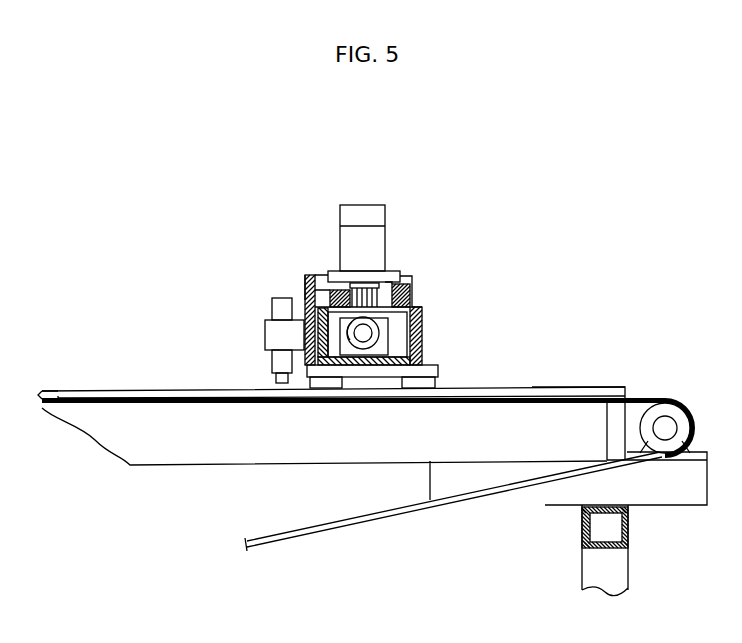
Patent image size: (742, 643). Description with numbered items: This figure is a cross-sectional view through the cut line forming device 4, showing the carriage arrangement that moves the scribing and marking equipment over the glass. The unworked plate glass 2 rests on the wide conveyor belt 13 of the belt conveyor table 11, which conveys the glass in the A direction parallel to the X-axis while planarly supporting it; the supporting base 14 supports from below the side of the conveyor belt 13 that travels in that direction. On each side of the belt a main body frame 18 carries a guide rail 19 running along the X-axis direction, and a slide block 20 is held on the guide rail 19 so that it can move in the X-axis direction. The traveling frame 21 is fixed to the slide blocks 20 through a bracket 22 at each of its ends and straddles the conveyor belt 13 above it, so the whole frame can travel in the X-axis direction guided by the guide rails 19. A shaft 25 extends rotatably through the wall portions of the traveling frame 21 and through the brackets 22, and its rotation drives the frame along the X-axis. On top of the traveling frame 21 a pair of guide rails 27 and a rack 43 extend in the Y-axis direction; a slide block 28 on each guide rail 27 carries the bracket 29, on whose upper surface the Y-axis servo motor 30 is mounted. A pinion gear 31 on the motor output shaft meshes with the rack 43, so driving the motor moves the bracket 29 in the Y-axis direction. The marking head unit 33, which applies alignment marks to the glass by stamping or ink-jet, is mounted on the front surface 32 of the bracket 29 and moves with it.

The unworked plate glass 2 is at (96, 397).
The cut line forming device 4 is at (592, 366).
The belt conveyor table 11 is at (173, 391).
The conveyor belt 13 is at (51, 391).
The supporting base 14 is at (156, 433).
The main body frame 18 is at (607, 526).
The guide rail 19 is at (533, 386).
The slide block 20 is at (420, 382).
The traveling frame 21 is at (419, 306).
The bracket 22 is at (386, 367).
The shaft 25 is at (370, 333).
The guide rail 27 is at (324, 293).
The slide block 28 is at (333, 291).
The bracket 29 is at (392, 283).
The Y-axis servo motor 30 is at (363, 262).
The pinion gear 31 is at (370, 292).
The front surface 32 is at (306, 300).
The marking head unit 33 is at (270, 337).
The rack 43 is at (350, 290).